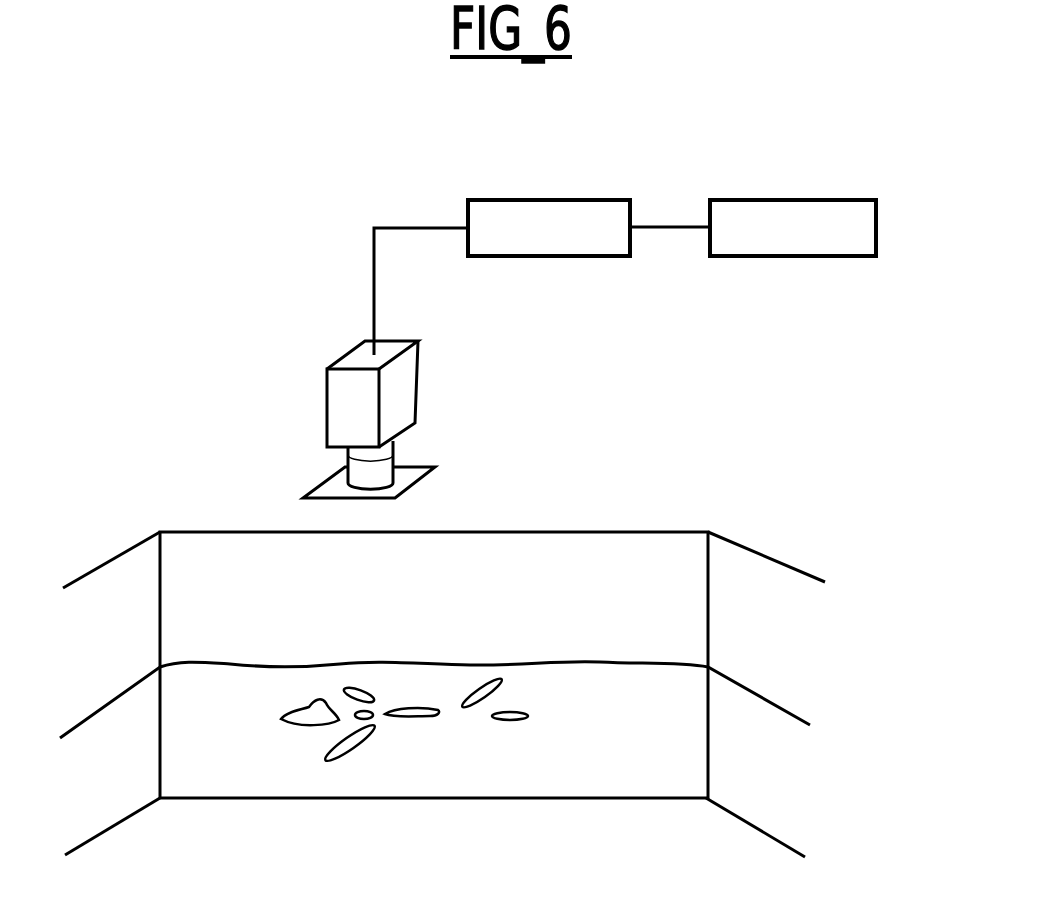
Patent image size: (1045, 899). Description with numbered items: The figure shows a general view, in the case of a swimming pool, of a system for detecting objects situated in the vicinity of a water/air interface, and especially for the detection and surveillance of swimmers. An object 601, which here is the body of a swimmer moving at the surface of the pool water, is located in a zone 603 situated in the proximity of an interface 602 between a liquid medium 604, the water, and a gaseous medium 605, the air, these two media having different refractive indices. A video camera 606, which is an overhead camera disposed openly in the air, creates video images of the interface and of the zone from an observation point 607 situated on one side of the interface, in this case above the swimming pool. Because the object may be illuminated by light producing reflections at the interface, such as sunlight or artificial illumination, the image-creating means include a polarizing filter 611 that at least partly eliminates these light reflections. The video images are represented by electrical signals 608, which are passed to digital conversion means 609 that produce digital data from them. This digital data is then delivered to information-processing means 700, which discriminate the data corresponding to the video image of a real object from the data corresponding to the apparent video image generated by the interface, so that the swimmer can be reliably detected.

The object 601 is at (430, 714).
The interface 602 is at (760, 676).
The zone 603 is at (598, 592).
The liquid medium 604 is at (245, 736).
The gaseous medium 605 is at (252, 598).
The video camera 606 is at (327, 392).
The observation point 607 is at (372, 458).
The electrical signals 608 is at (390, 205).
The digital conversion means 609 is at (552, 215).
The polarizing filter 611 is at (330, 486).
The information-processing means 700 is at (790, 200).